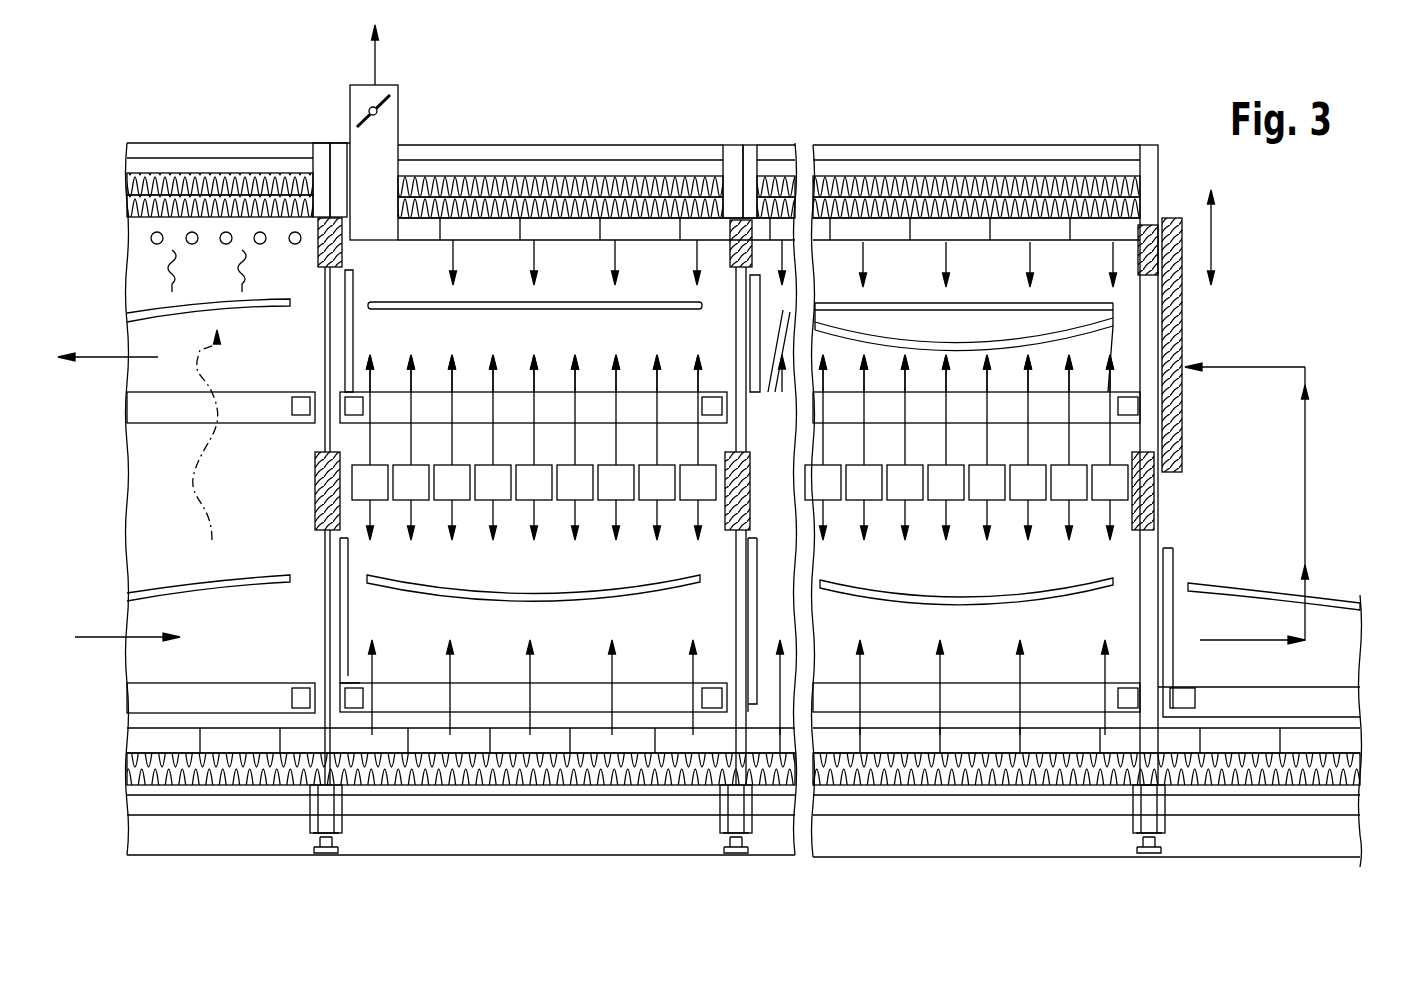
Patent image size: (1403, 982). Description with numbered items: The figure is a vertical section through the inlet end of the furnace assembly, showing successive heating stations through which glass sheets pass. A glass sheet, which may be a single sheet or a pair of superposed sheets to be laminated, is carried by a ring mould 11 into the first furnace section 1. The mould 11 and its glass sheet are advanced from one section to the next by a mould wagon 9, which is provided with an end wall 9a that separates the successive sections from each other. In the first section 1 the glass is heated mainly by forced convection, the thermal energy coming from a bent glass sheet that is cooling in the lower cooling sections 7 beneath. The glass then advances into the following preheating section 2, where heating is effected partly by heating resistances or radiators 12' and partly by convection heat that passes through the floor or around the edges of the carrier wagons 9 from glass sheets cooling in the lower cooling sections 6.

The heating section 1 is at (555, 252).
The preheating section 2 is at (208, 222).
The lower cooling section 6 is at (143, 521).
The lower cooling section 7 is at (582, 648).
The mould wagon 9 is at (253, 405).
The end wall 9a is at (352, 285).
The ring mould 11 is at (983, 342).
The nozzles 12' is at (182, 257).